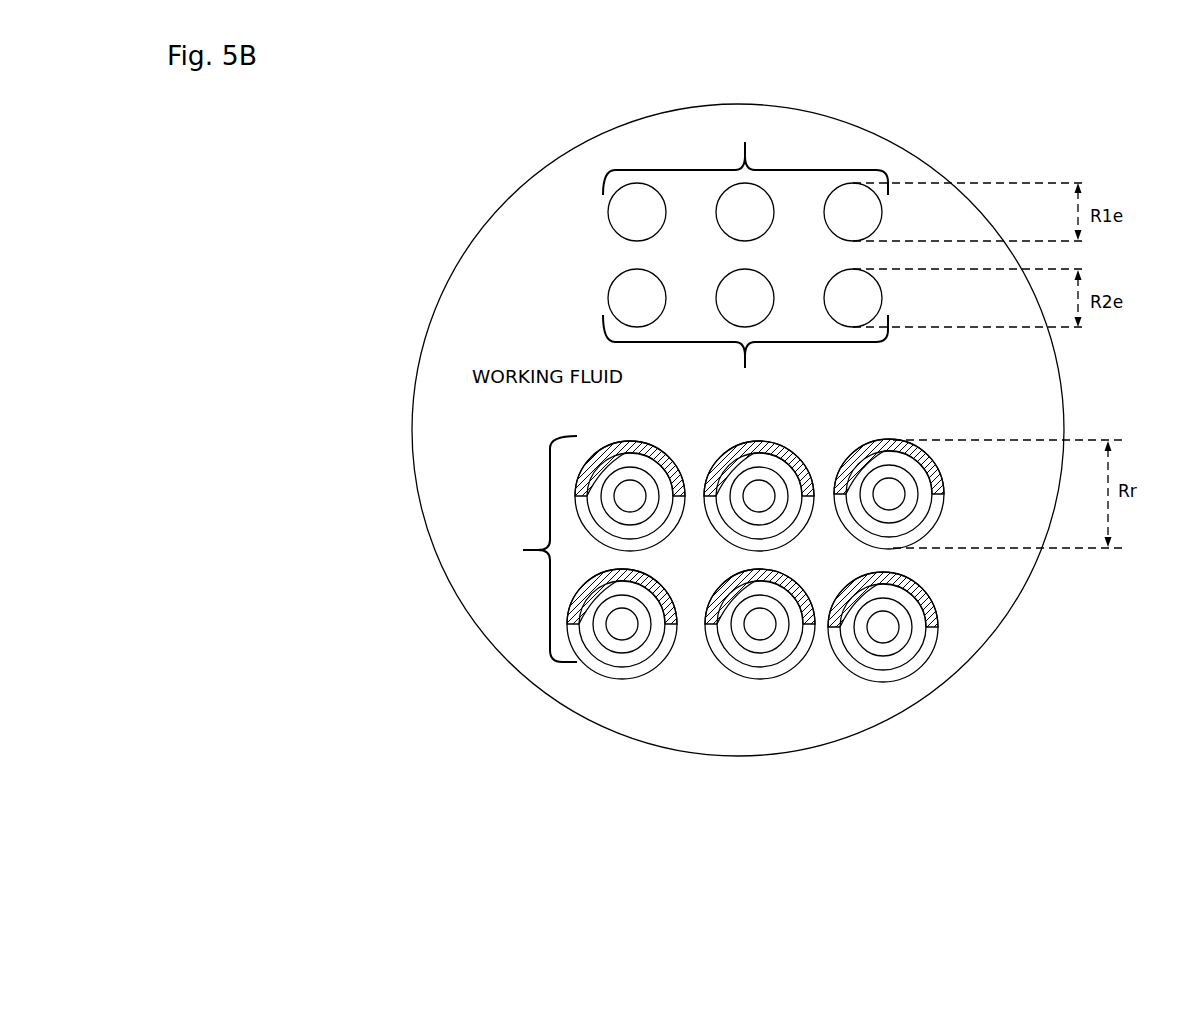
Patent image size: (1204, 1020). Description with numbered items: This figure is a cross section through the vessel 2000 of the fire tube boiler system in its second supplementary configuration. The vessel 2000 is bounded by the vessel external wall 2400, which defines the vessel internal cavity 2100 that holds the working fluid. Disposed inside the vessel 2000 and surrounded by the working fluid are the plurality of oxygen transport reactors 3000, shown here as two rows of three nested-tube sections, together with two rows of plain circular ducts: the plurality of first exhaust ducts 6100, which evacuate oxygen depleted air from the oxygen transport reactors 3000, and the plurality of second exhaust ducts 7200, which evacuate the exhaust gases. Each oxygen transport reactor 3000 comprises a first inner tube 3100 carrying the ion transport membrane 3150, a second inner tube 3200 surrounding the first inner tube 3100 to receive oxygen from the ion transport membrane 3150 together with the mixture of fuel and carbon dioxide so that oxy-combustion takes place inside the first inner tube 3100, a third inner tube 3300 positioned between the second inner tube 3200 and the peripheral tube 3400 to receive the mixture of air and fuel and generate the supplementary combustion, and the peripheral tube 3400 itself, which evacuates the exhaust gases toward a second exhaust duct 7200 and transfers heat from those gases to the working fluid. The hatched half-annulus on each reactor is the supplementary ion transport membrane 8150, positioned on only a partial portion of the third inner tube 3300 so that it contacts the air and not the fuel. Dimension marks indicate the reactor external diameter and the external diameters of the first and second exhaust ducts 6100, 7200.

The vessel 2000 is at (424, 186).
The vessel external wall 2400 is at (413, 442).
The first exhaust ducts 6100 is at (745, 142).
The second exhaust ducts 7200 is at (746, 368).
The vessel internal cavity 2100 is at (767, 437).
The oxygen transport reactors 3000 is at (523, 550).
The first inner tube 3100 is at (883, 627).
The ion transport membrane 3150 is at (898, 628).
The second inner tube 3200 is at (883, 650).
The third inner tube 3300 is at (882, 672).
The peripheral tube 3400 is at (838, 657).
The supplementary ion transport membrane 8150 is at (937, 612).